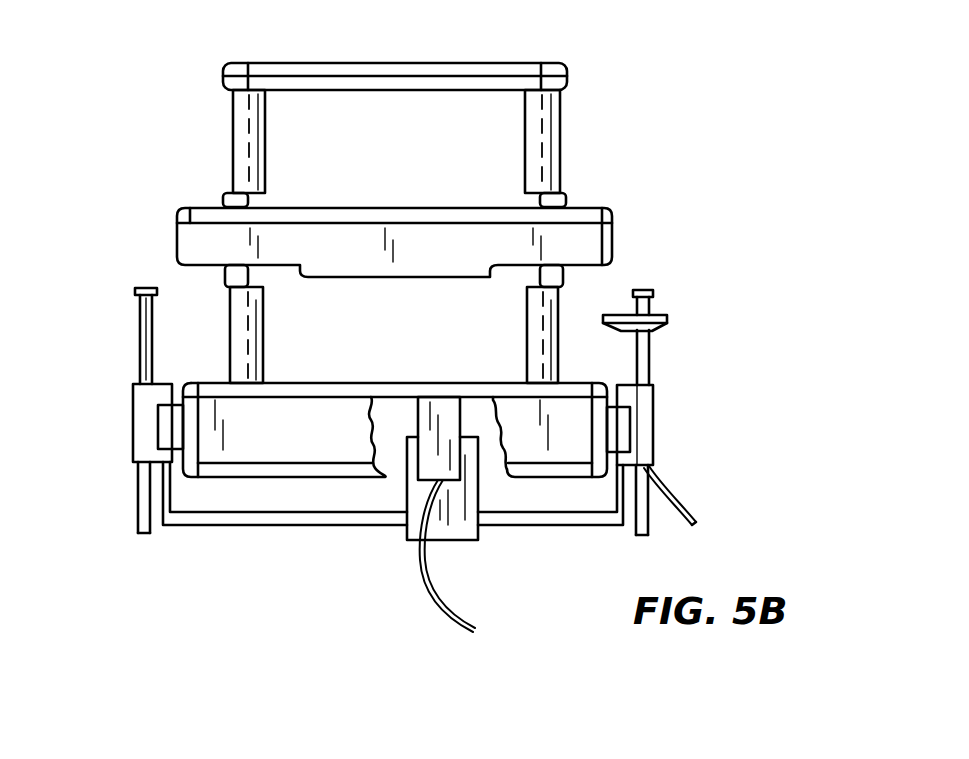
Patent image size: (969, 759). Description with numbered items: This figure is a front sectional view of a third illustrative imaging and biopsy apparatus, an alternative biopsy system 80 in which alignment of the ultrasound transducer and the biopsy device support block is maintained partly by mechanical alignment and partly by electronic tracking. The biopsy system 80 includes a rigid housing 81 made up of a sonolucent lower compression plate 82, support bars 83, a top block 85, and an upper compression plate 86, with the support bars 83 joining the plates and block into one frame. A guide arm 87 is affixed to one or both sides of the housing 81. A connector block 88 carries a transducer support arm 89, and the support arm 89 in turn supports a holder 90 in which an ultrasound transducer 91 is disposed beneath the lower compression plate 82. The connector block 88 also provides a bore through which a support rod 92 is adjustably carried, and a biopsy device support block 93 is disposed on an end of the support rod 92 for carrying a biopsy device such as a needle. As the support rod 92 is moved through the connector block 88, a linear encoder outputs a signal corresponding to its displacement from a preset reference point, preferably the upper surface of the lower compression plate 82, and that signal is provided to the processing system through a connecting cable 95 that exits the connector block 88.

The biopsy system 80 is at (634, 133).
The rigid housing 81 is at (283, 450).
The sonolucent lower compression plate 82 is at (330, 383).
The support bars 83 is at (265, 122).
The top block 85 is at (400, 63).
The upper compression plate 86 is at (178, 210).
The guide arm 87 is at (170, 422).
The connector block 88 is at (133, 440).
The transducer support arm 89 is at (532, 520).
The holder 90 is at (465, 540).
The ultrasound transducer 91 is at (422, 460).
The support rod 92 is at (137, 325).
The biopsy device support block 93 is at (656, 315).
The connecting cable 95 is at (673, 500).